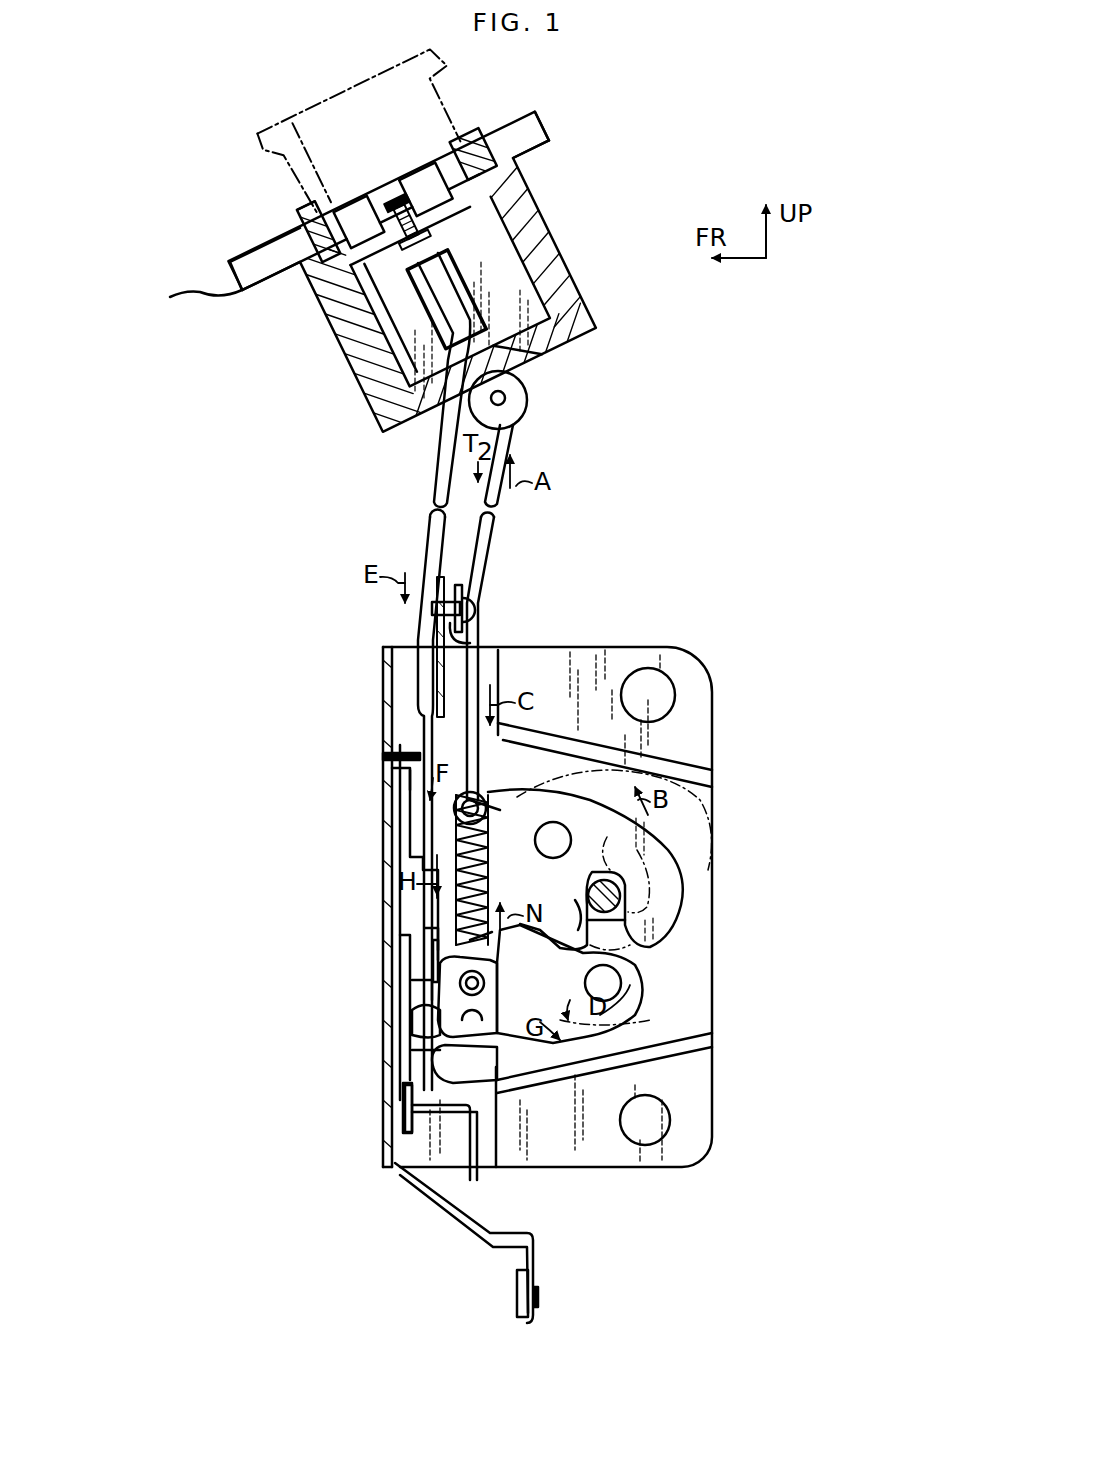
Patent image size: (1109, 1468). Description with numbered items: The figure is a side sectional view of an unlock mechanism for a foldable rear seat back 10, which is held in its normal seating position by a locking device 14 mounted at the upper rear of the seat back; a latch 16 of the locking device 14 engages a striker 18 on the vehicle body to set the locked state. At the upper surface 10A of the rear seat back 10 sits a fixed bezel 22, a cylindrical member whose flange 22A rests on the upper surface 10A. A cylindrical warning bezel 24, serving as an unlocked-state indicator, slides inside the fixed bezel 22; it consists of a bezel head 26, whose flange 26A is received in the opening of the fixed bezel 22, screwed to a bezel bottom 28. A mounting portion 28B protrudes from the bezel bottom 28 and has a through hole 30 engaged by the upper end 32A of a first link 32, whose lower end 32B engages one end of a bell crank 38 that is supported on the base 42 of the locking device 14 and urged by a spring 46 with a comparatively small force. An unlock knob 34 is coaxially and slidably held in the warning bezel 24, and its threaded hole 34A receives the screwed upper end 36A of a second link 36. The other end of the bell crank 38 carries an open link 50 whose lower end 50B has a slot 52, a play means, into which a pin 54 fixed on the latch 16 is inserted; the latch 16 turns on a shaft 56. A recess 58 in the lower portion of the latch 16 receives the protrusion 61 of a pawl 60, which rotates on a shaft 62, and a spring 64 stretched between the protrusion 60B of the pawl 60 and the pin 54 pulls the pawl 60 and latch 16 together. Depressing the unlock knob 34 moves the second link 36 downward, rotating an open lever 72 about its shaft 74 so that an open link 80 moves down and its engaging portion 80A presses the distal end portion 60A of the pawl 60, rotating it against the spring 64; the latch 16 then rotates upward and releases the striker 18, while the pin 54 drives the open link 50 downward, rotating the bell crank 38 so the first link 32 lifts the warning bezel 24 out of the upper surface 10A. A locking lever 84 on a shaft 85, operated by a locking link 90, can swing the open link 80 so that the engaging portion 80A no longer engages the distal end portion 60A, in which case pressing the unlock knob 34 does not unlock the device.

The rear seat back 10 is at (197, 284).
The upper surface 10A is at (216, 282).
The locking device 14 is at (575, 857).
The latch 16 is at (625, 860).
The striker 18 is at (600, 880).
The fixed bezel 22 is at (575, 264).
The flange 22A is at (545, 118).
The warning bezel 24 is at (282, 95).
The bezel head 26 is at (296, 270).
The flange 26A is at (470, 130).
The bezel bottom 28 is at (352, 322).
The mounting portion 28B is at (515, 372).
The through hole 30 is at (506, 398).
The first link 32 is at (495, 540).
The upper end 32A is at (505, 412).
The lower end 32B is at (432, 608).
The unlock knob 34 is at (398, 195).
The threaded hole 34A is at (440, 205).
The second link 36 is at (425, 528).
The upper end 36A is at (382, 185).
The bell crank 38 is at (467, 595).
The base 42 is at (713, 742).
The spring 46 is at (473, 638).
The open link 50 is at (485, 676).
The lower end 50B is at (480, 795).
The slot 52 is at (488, 828).
The pin 54 is at (505, 812).
The shaft 56 is at (560, 830).
The recess 58 is at (505, 975).
The pawl 60 is at (590, 1040).
The distal end portion 60A is at (412, 1020).
The protrusion 60B is at (465, 1064).
The protrusion 61 is at (572, 932).
The shaft 62 is at (612, 985).
The spring 64 is at (425, 930).
The open lever 72 is at (392, 782).
The shaft 74 is at (396, 810).
The open link 80 is at (400, 905).
The engaging portion 80A is at (412, 985).
The locking lever 84 is at (473, 1212).
The shaft 85 is at (400, 1120).
The locking link 90 is at (517, 1292).